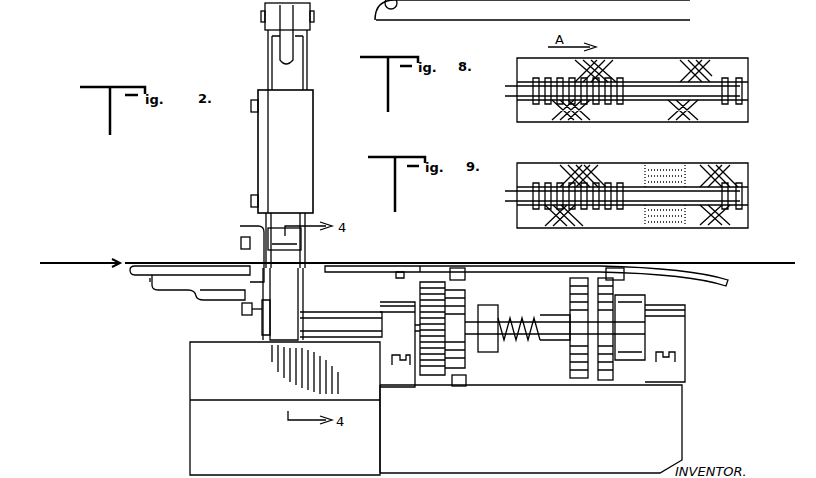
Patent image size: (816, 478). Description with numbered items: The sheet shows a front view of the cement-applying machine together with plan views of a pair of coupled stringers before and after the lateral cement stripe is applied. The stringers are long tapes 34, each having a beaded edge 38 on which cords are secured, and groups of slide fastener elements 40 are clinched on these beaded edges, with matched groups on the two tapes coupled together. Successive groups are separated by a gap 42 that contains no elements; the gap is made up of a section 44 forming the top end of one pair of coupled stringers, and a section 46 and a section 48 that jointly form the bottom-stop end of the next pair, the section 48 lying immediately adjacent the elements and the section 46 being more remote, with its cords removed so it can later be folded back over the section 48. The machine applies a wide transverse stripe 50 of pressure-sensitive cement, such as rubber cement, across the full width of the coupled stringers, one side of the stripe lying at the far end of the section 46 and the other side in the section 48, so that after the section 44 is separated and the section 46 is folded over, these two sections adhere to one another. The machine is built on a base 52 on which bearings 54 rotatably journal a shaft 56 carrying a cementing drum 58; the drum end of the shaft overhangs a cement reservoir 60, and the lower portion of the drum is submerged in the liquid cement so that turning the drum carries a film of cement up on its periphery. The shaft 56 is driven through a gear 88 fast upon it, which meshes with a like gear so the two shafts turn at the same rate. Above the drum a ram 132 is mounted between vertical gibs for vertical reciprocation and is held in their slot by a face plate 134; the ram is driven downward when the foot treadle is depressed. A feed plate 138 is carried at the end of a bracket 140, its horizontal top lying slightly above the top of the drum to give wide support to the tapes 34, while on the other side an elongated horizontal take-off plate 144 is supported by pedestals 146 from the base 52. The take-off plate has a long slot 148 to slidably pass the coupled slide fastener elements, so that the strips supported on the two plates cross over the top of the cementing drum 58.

In FIG. 2, the long tape 34 is at (80, 260).
In FIG. 8, the beaded edge 38 is at (517, 96).
In FIG. 9, the beaded edge 38 is at (517, 201).
In FIG. 8, the slide fastener elements 40 is at (636, 82).
In FIG. 9, the slide fastener elements 40 is at (637, 187).
In FIG. 8, the gap 42 is at (694, 78).
In FIG. 8, the section 44 is at (724, 68).
In FIG. 9, the section 44 is at (735, 172).
In FIG. 8, the section 46 is at (688, 75).
In FIG. 8, the section 48 is at (660, 68).
In FIG. 9, the cement stripe 50 is at (670, 166).
In FIG. 2, the base 52 is at (678, 411).
In FIG. 2, the bearings 54 is at (380, 340).
In FIG. 2, the shaft 56 is at (355, 326).
In FIG. 2, the cementing drum 58 is at (292, 313).
In FIG. 2, the cement reservoir 60 is at (190, 364).
In FIG. 2, the gear 88 is at (424, 272).
In FIG. 2, the ram 132 is at (306, 226).
In FIG. 2, the face plate 134 is at (259, 158).
In FIG. 2, the feed plate 138 is at (148, 277).
In FIG. 2, the bracket 140 is at (223, 300).
In FIG. 2, the take-off plate 144 is at (398, 273).
In FIG. 2, the pedestals 146 is at (466, 276).
In FIG. 2, the slot 148 is at (352, 272).